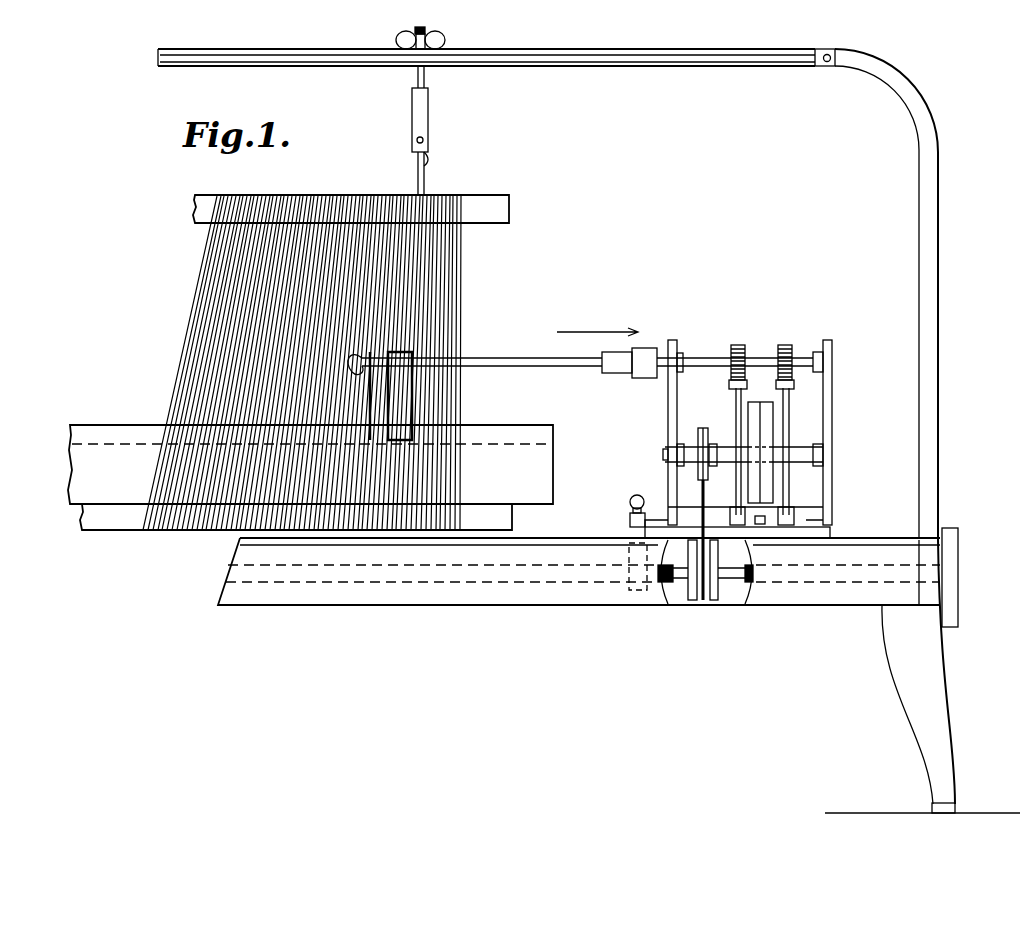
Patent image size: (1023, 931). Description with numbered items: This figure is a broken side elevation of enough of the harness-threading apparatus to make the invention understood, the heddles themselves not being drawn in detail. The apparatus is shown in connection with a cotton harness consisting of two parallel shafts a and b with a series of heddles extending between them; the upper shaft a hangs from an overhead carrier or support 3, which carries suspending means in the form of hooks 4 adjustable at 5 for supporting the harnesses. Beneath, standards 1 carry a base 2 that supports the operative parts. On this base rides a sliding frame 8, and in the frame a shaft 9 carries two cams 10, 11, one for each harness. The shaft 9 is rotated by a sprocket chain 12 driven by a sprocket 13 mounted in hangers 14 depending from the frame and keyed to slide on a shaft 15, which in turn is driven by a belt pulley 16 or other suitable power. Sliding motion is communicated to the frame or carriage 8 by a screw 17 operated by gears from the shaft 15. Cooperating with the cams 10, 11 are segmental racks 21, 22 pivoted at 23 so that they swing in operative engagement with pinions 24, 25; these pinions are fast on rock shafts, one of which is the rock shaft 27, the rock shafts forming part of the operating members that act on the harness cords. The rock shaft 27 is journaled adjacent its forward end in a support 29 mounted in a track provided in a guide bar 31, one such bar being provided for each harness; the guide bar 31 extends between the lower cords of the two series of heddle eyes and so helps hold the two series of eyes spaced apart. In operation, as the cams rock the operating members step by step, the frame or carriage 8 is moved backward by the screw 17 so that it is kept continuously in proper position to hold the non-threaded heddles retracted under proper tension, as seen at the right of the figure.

The standard 1 is at (900, 652).
The base 2 is at (822, 598).
The overhead carrier 3 is at (930, 369).
The hook 4 is at (428, 127).
The adjusting means 5 is at (442, 38).
The sliding frame 8 is at (832, 438).
The shaft 9 is at (803, 453).
The cam 10 is at (772, 417).
The cam 11 is at (752, 412).
The sprocket chain 12 is at (700, 485).
The sprocket 13 is at (718, 590).
The hanger 14 is at (690, 588).
The shaft 15 is at (731, 586).
The belt pulley 16 is at (955, 536).
The screw 17 is at (752, 586).
The segmental rack 21 is at (794, 385).
The segmental rack 22 is at (747, 385).
The pivot 23 is at (796, 508).
The pinion 24 is at (786, 345).
The pinion 25 is at (738, 345).
The rock shaft 27 is at (805, 360).
The support 29 is at (412, 394).
The guide bar 31 is at (70, 453).
The shaft a is at (510, 210).
The shaft b is at (120, 534).